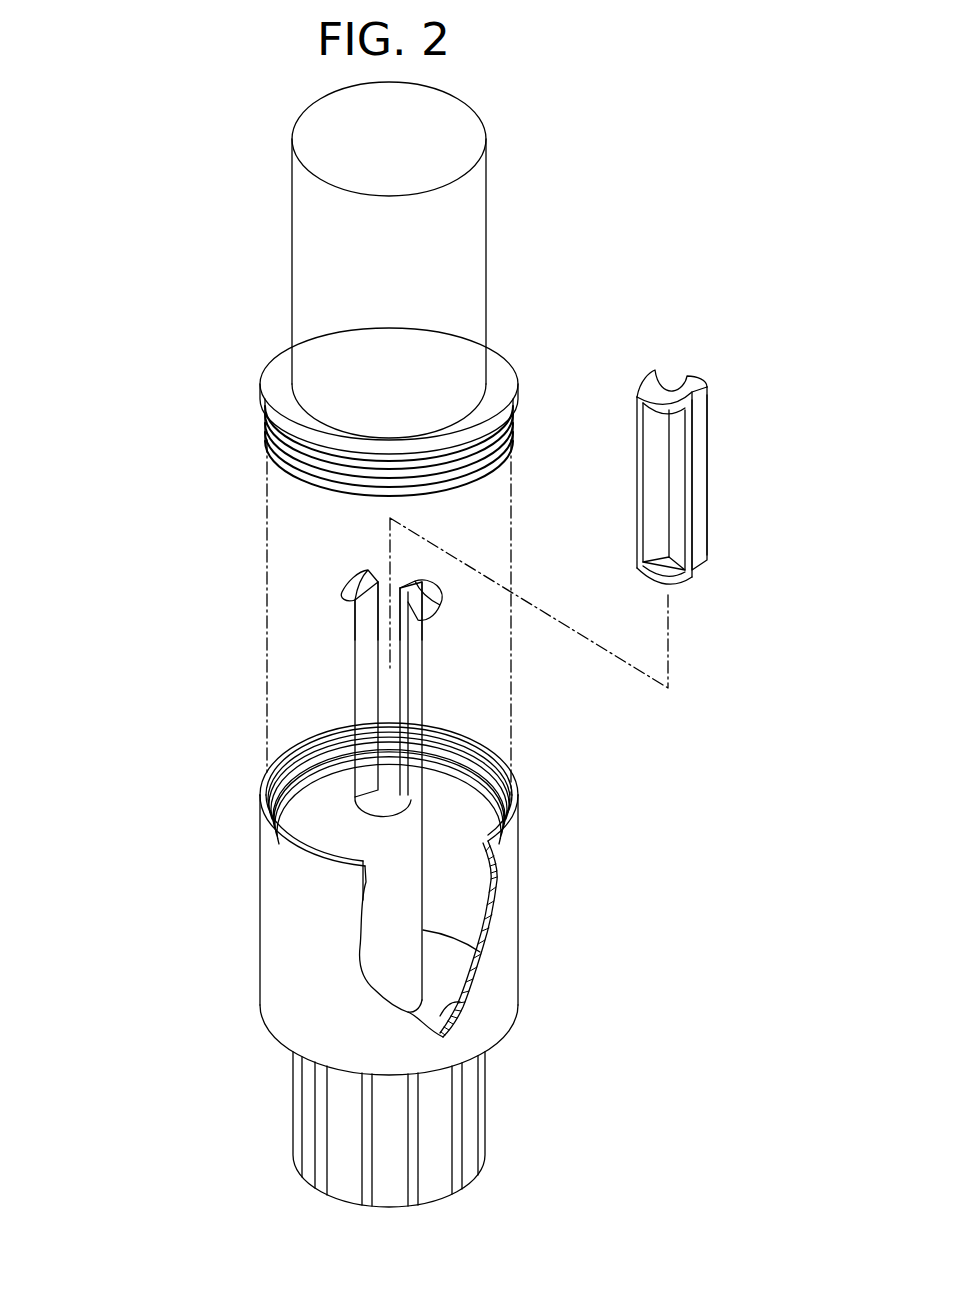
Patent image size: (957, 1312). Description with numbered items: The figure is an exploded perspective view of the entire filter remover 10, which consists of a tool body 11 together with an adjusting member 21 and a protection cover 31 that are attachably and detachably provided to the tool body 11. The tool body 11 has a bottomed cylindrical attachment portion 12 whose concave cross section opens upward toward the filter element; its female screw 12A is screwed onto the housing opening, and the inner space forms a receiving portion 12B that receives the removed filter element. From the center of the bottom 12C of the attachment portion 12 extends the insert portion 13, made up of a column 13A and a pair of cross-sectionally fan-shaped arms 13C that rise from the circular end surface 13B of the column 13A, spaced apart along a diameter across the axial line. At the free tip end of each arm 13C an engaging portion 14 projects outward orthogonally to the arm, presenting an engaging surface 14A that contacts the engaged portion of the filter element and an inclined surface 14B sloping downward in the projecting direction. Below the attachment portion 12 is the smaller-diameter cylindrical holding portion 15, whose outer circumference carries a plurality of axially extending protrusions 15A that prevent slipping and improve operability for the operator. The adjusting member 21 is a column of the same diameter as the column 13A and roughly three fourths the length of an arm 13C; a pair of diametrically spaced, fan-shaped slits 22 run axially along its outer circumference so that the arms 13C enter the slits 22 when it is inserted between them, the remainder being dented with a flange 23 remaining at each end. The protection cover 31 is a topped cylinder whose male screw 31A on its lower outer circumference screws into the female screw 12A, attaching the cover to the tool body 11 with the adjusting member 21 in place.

The filter remover 10 is at (140, 241).
The tool body 11 is at (221, 861).
The attachment portion 12 is at (520, 932).
The female screw 12A is at (309, 787).
The receiving portion 12B is at (452, 967).
The bottom 12C is at (470, 1007).
The insert portion 13 is at (423, 845).
The column 13A is at (412, 897).
The end surface 13B is at (389, 805).
The arm 13C is at (356, 686).
The engaging portion 14 is at (342, 597).
The engaging surface 14A is at (348, 604).
The inclined surface 14B is at (350, 582).
The holding portion 15 is at (437, 1187).
The protrusion 15A is at (320, 1172).
The adjusting member 21 is at (686, 373).
The slit 22 is at (652, 385).
The flange 23 is at (660, 416).
The protection cover 31 is at (478, 220).
The male screw 31A is at (306, 475).